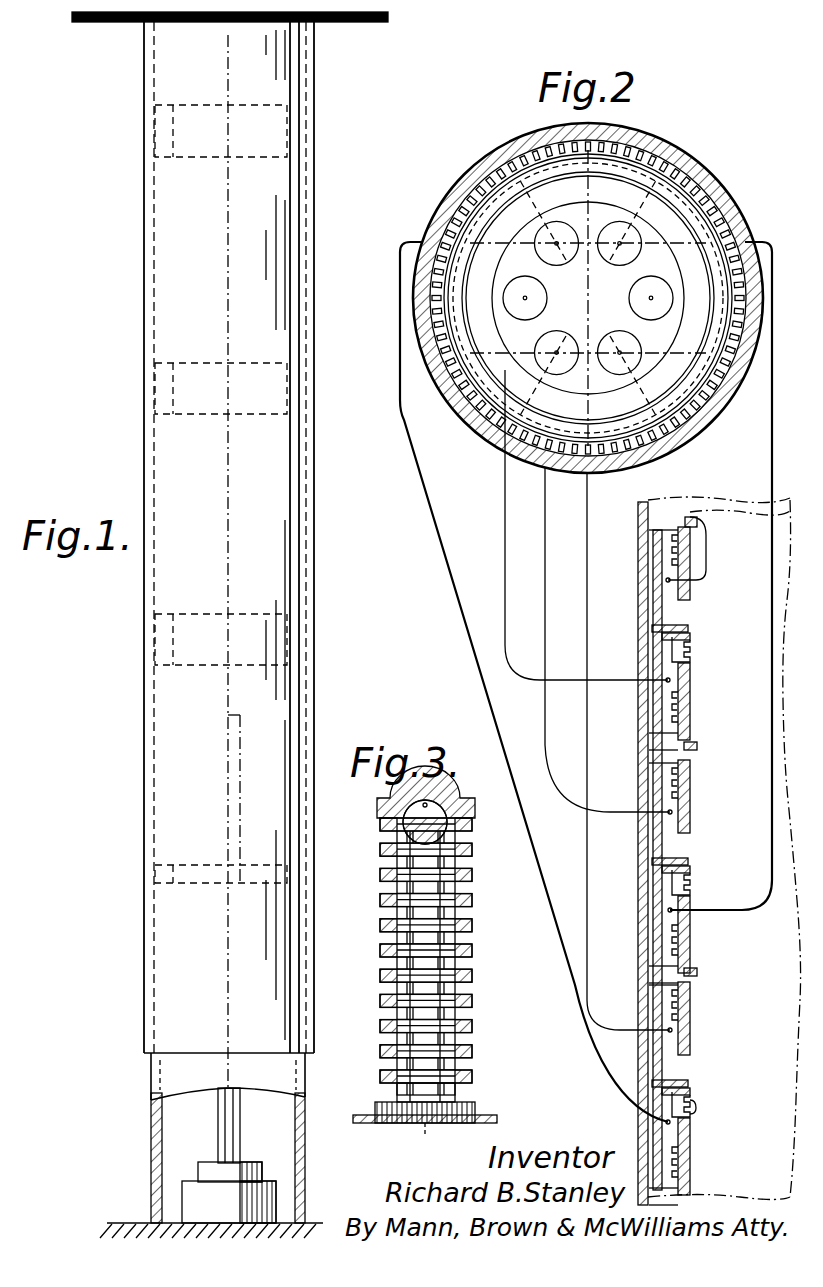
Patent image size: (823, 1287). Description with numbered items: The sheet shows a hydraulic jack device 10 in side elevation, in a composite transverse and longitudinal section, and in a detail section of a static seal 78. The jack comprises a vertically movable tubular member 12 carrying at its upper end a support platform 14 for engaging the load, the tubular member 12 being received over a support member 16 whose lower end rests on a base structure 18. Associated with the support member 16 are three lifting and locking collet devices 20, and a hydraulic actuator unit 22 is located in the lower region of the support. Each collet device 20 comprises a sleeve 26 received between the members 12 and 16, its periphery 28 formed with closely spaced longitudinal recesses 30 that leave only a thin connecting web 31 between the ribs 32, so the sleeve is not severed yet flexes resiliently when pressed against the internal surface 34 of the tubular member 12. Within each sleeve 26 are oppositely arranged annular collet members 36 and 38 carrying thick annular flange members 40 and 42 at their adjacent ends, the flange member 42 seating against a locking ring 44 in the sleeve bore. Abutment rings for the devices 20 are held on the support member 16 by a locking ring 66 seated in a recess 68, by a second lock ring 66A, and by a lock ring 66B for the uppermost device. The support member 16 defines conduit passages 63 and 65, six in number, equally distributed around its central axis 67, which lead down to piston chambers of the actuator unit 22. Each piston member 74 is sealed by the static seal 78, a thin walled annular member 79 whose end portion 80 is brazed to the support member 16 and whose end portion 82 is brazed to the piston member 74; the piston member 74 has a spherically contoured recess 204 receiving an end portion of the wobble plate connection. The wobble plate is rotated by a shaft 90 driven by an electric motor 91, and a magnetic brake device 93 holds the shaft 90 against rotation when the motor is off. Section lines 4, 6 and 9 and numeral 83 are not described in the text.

In FIG. 1, the section line 4- 4 is at (252, 760).
In FIG. 1, the section line 6- 6 is at (252, 148).
In FIG. 1, the section line 9- 9 is at (255, 66).
In FIG. 1, the jack device 10 is at (336, 150).
In FIG. 2, the jack device 10 is at (688, 133).
In FIG. 1, the tubular member 12 is at (318, 272).
In FIG. 2, the tubular member 12 is at (708, 168).
In FIG. 1, the support platform 14 is at (372, 22).
In FIG. 1, the support member 16 is at (145, 1082).
In FIG. 2, the support member 16 is at (690, 232).
In FIG. 1, the base structure 18 is at (118, 1218).
In FIG. 1, the lifting and locking collet devices 20 is at (274, 213).
In FIG. 2, the lifting and locking collet devices 20 is at (625, 628).
In FIG. 1, the hydraulic actuator unit 22 is at (172, 1010).
In FIG. 2, the sleeve 26 is at (478, 428).
In FIG. 2, the periphery 28 is at (458, 378).
In FIG. 2, the recesses 30 is at (445, 335).
In FIG. 2, the connecting web 31 is at (448, 245).
In FIG. 2, the ribs 32 is at (440, 300).
In FIG. 2, the internal surface 34 is at (470, 200).
In FIG. 2, the collet member 36 is at (678, 660).
In FIG. 2, the collet member 38 is at (685, 618).
In FIG. 2, the flange member 40 is at (698, 1106).
In FIG. 2, the flange member 42 is at (692, 1080).
In FIG. 2, the locking ring 44 is at (658, 866).
In FIG. 2, the conduit passage 63 is at (605, 235).
In FIG. 2, the conduit passage 65 is at (588, 298).
In FIG. 2, the locking ring 66 is at (700, 975).
In FIG. 2, the lock ring 66A is at (698, 745).
In FIG. 2, the locking ring 66B is at (690, 522).
In FIG. 2, the central axis 67 is at (595, 300).
In FIG. 2, the recess 68 is at (700, 982).
In FIG. 3, the piston member 74 is at (450, 805).
In FIG. 3, the static seal 78 is at (478, 873).
In FIG. 3, the thin walled annular member 79 is at (472, 898).
In FIG. 3, the end portion 80 is at (478, 1118).
In FIG. 3, the end portion 82 is at (472, 828).
In FIG. 3, the stack 83 is at (472, 931).
In FIG. 1, the shaft 90 is at (242, 1130).
In FIG. 1, the electric motor 91 is at (282, 1200).
In FIG. 1, the magnetic brake device 93 is at (212, 1171).
In FIG. 3, the spherically contoured recesses 204 is at (430, 800).